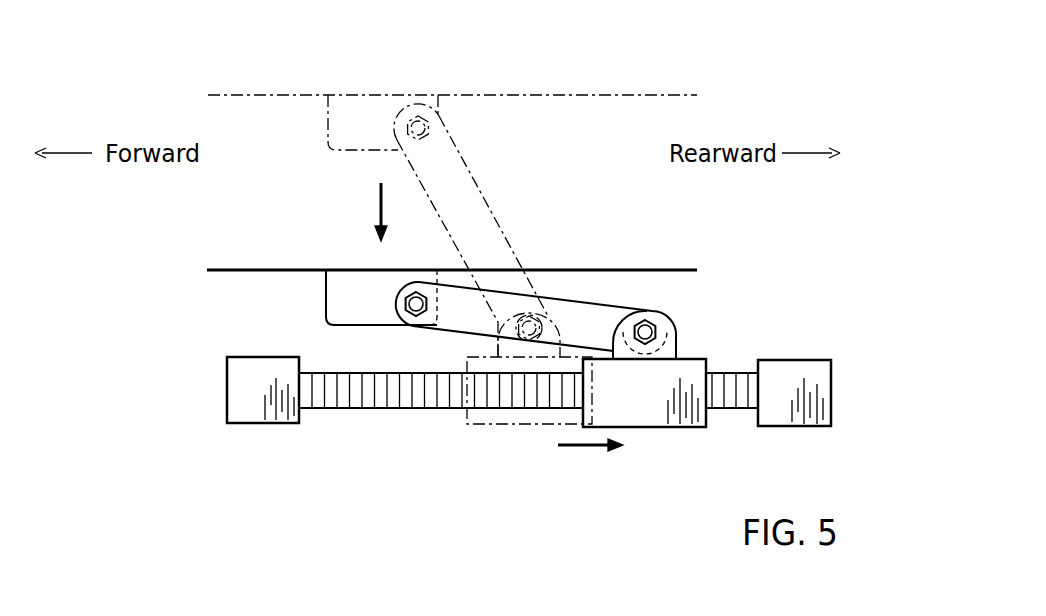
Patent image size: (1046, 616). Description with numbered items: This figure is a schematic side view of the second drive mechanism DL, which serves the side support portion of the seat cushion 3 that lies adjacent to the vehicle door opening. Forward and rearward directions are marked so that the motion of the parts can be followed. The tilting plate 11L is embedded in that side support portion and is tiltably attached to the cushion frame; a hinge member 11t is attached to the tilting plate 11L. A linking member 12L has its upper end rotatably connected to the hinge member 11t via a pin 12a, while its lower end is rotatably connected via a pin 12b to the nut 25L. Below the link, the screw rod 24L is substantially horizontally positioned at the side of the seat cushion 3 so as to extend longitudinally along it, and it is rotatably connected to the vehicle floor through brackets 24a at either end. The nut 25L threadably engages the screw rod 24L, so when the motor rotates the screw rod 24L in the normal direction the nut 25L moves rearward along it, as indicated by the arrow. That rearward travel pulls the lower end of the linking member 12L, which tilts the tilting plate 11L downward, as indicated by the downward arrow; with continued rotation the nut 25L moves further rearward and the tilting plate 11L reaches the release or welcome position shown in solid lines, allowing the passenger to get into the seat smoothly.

The seat cushion 3 is at (657, 71).
The tilting plate 11L is at (420, 296).
The hinge member 11t is at (330, 297).
The linking member 12L is at (582, 315).
The pin 12a is at (415, 292).
The pin 12b is at (657, 330).
The drive mechanism DL is at (763, 276).
The screw rod 24L is at (370, 397).
The bracket 24a is at (247, 400).
The nut 25L is at (647, 390).